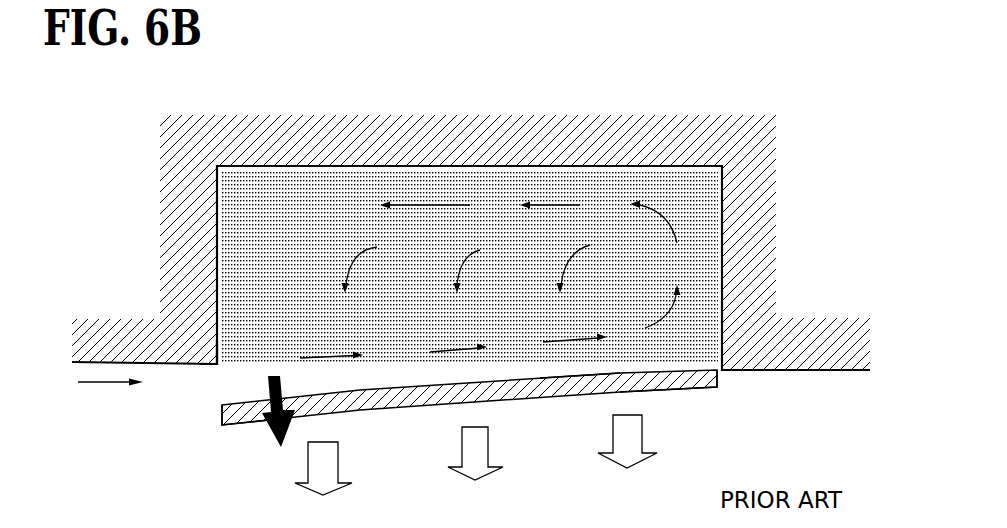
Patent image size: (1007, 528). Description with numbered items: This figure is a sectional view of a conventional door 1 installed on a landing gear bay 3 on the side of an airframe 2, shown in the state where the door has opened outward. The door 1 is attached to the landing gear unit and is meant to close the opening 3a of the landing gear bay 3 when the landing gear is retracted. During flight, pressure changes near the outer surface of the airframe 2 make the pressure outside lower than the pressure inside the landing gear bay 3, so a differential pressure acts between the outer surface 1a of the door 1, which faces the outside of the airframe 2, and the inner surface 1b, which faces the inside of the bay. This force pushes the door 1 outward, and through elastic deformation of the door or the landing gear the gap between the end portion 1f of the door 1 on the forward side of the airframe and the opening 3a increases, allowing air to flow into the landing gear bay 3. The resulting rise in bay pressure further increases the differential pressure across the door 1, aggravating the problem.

The landing gear bay 3 is at (722, 207).
The opening 3a is at (223, 365).
The airframe 2 is at (790, 370).
The door 1 is at (410, 407).
The outer surface 1a is at (573, 395).
The inner surface 1b is at (643, 392).
The end portion 1f is at (242, 428).